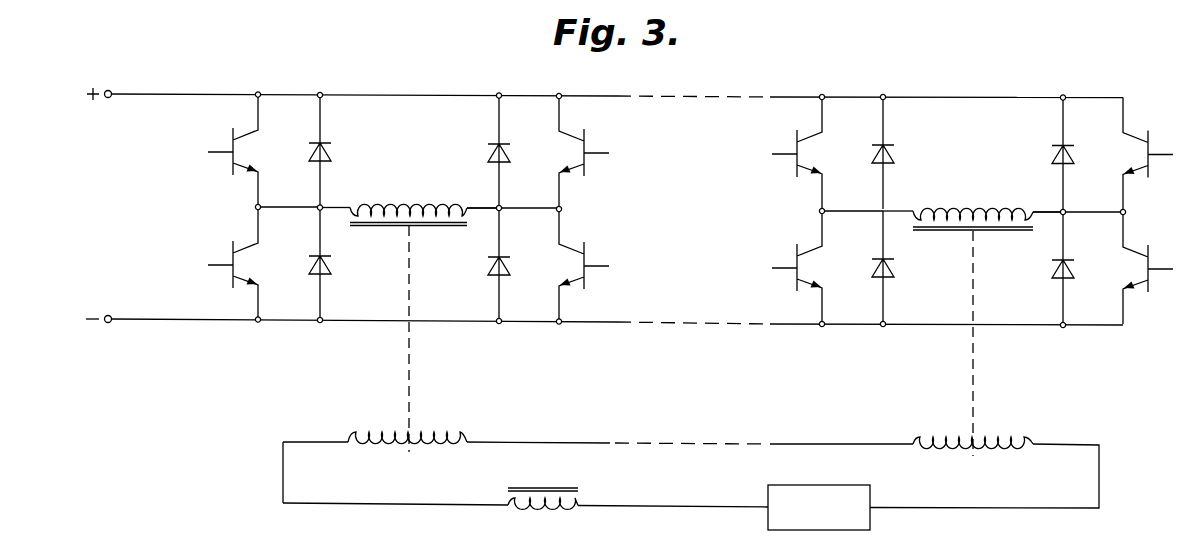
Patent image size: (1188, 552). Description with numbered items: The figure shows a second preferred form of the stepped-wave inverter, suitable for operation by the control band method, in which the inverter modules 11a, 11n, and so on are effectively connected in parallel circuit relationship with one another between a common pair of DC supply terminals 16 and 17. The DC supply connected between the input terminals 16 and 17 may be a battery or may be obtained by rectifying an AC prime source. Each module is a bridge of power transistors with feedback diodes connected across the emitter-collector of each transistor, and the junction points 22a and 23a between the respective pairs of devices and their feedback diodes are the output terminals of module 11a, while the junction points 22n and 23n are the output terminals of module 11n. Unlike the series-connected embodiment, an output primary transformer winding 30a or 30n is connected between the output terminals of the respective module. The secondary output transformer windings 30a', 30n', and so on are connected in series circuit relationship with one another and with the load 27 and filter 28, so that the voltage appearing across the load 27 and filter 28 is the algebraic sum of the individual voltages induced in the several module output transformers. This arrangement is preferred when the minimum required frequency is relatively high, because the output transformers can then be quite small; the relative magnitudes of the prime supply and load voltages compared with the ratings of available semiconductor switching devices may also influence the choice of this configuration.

The DC supply terminal 16 is at (150, 92).
The DC supply terminal 17 is at (134, 311).
The inverter module 11a is at (421, 145).
The inverter module 11n is at (982, 157).
The junction point 22a is at (322, 206).
The junction point 23a is at (497, 210).
The output primary transformer winding 30a is at (408, 231).
The junction point 22n is at (824, 210).
The junction point 23n is at (1065, 214).
The output primary transformer winding 30n is at (973, 233).
The secondary output transformer winding 30a' is at (407, 423).
The secondary output transformer winding 30n' is at (976, 427).
The filter 28 is at (577, 500).
The load 27 is at (855, 485).